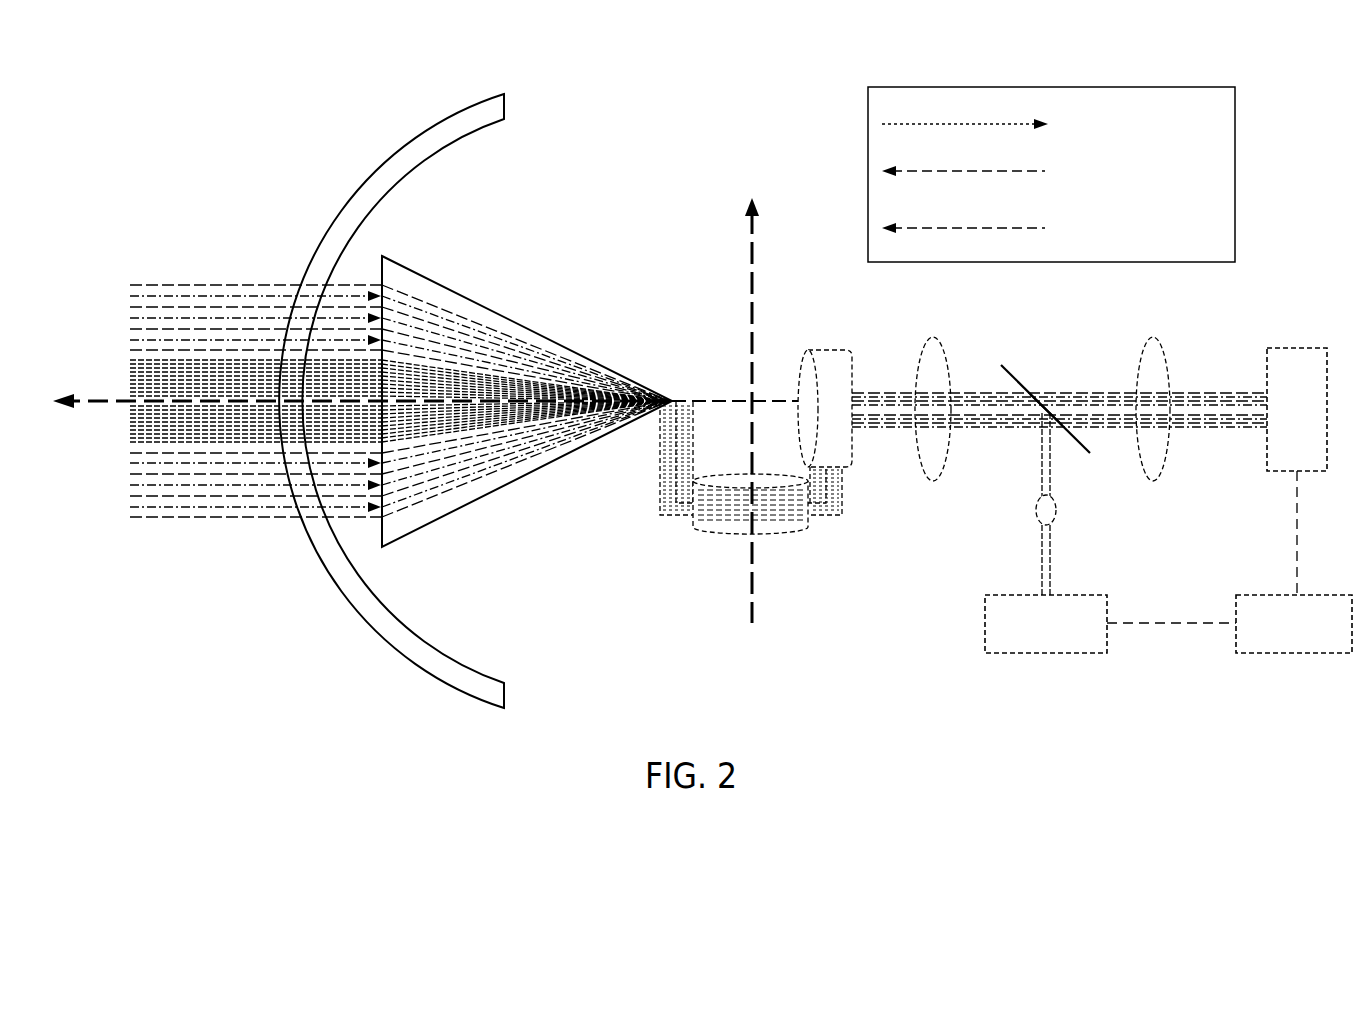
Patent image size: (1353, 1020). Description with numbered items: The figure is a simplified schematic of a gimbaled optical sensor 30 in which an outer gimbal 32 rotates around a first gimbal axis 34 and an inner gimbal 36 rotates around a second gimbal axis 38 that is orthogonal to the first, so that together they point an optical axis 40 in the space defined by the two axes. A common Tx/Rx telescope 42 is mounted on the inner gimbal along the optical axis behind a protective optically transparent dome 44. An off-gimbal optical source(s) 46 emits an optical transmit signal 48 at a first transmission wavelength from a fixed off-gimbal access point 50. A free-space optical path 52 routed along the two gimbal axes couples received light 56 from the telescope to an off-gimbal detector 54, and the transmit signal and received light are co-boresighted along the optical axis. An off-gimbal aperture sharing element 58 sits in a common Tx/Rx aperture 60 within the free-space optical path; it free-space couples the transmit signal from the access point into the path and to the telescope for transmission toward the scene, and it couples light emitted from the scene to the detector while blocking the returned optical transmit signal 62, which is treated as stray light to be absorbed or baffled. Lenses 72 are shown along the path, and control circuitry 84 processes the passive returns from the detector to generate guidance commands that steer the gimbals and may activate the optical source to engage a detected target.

The gimbaled optical sensor 30 is at (220, 106).
The outer gimbal 32 is at (785, 530).
The first gimbal axis 34 is at (750, 587).
The inner gimbal 36 is at (832, 351).
The second gimbal axis 38 is at (707, 398).
The optical axis 40 is at (93, 398).
The common Tx/Rx telescope 42 is at (530, 333).
The protective optically transparent dome 44 is at (380, 168).
The off-gimbal optical source(s) 46 is at (1060, 594).
The optical transmit signal 48 is at (146, 360).
The off-gimbal access point 50 is at (1036, 512).
The free-space optical path 52 is at (652, 486).
The off-gimbal detector 54 is at (1298, 348).
The received light 56 is at (212, 287).
The off-gimbal aperture sharing element 58 is at (1048, 410).
The common Tx/Rx aperture 60 is at (1023, 381).
The returned optical transmit signal 62 is at (190, 517).
The lens 72 is at (940, 340).
The control circuitry 84 is at (1297, 655).